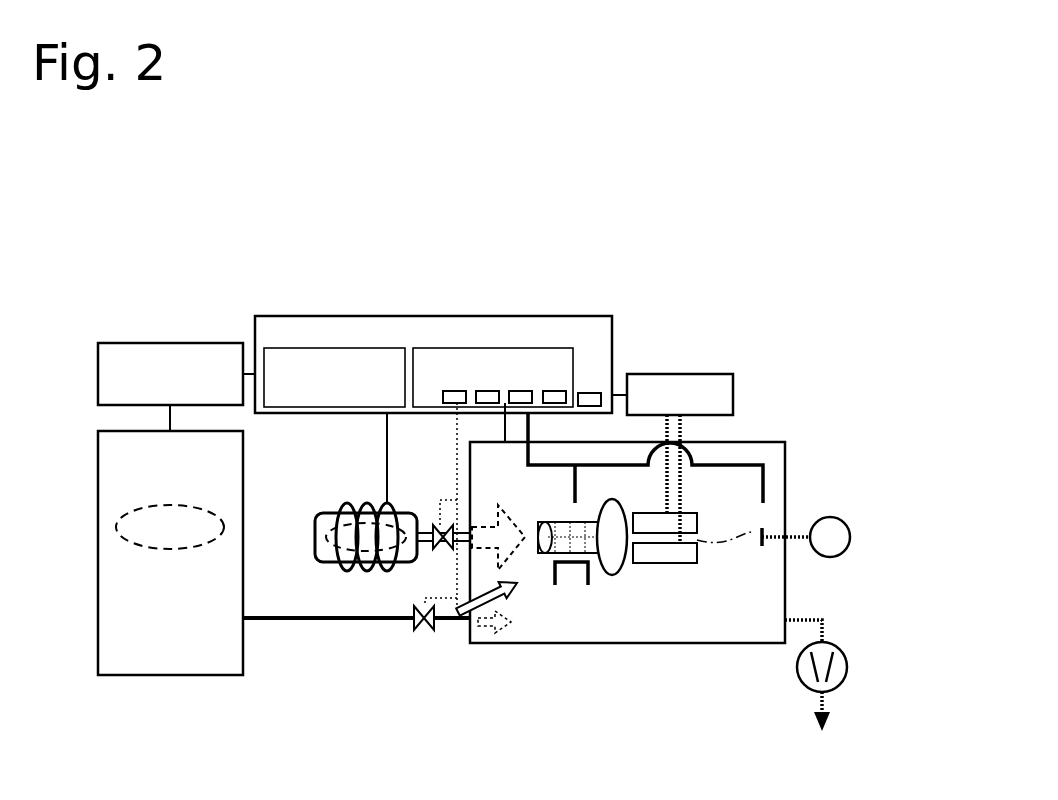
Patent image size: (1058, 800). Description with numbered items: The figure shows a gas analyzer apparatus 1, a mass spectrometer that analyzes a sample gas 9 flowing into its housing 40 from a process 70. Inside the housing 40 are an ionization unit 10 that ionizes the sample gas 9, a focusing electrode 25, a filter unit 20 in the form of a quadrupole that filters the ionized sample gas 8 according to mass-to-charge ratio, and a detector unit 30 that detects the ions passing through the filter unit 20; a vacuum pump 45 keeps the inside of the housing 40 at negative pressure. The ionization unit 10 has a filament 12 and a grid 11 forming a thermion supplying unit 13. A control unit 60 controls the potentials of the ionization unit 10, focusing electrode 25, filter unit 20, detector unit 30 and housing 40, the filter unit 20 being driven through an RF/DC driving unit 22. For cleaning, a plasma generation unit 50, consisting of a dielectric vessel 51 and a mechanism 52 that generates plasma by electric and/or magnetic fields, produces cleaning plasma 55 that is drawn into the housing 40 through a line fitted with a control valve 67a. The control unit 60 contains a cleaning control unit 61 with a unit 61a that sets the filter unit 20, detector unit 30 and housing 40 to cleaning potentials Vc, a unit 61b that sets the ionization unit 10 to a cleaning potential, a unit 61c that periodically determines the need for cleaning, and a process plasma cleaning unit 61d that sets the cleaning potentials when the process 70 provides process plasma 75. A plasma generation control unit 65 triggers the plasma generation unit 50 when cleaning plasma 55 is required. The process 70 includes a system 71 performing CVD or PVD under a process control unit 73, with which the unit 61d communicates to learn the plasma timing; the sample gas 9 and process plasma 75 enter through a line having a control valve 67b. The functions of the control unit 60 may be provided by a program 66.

The gas analyzer apparatus 1 is at (792, 393).
The ionized sample gas 8 is at (752, 533).
The sample gas 9 is at (510, 593).
The ionization unit 10 is at (568, 612).
The grid 11 is at (511, 590).
The filament 12 is at (590, 575).
The thermion supplying unit 13 is at (545, 588).
The filter unit 20 is at (682, 577).
The driving unit 22 is at (712, 378).
The focusing electrode 25 is at (620, 575).
The detector unit 30 is at (757, 565).
The housing 40 is at (785, 442).
The vacuum pump 45 is at (847, 667).
The plasma generation unit 50 is at (355, 520).
The vessel 51 is at (407, 560).
The mechanism 52 is at (365, 503).
The plasma 55 is at (478, 533).
The control unit 60 is at (592, 323).
The cleaning control unit 61 is at (560, 357).
The unit 61a is at (563, 397).
The unit 61b is at (522, 407).
The unit 61c is at (490, 407).
The process plasma cleaning unit 61d is at (455, 405).
The plasma generation control unit 65 is at (295, 352).
The program 66 is at (590, 400).
The control valve 67a is at (443, 548).
The control valve 67b is at (424, 628).
The process 70 is at (97, 425).
The system 71 is at (98, 466).
The process control unit 73 is at (112, 355).
The process plasma 75 is at (118, 530).